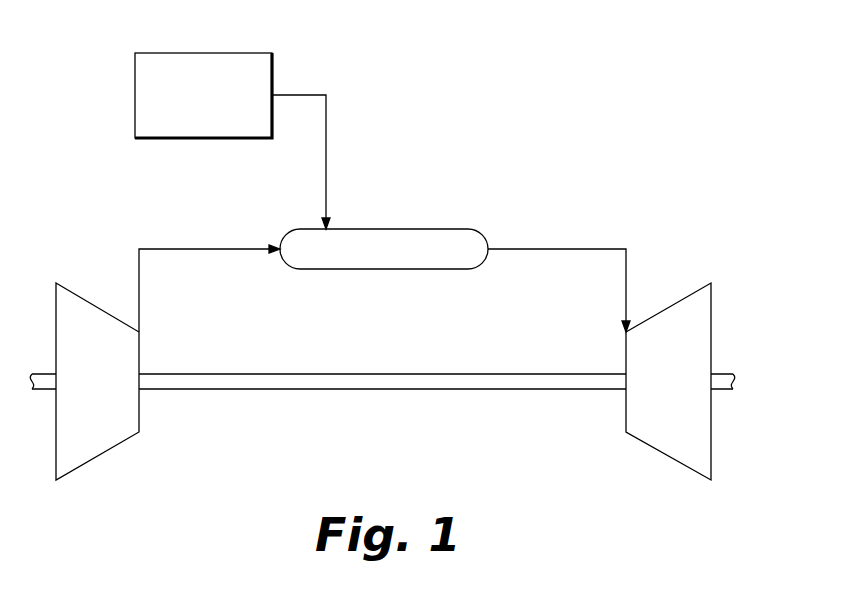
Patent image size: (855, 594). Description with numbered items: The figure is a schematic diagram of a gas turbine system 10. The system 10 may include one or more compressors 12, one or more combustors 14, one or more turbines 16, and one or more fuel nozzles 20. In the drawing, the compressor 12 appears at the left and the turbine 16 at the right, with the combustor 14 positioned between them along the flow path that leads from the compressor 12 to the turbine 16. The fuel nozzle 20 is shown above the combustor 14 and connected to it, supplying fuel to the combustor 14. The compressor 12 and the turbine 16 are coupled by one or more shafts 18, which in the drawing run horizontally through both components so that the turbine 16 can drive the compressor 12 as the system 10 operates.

The gas turbine system 10 is at (612, 172).
The compressor 12 is at (97, 455).
The combustor 14 is at (376, 229).
The turbine 16 is at (711, 302).
The shaft 18 is at (383, 390).
The fuel nozzle 20 is at (272, 53).